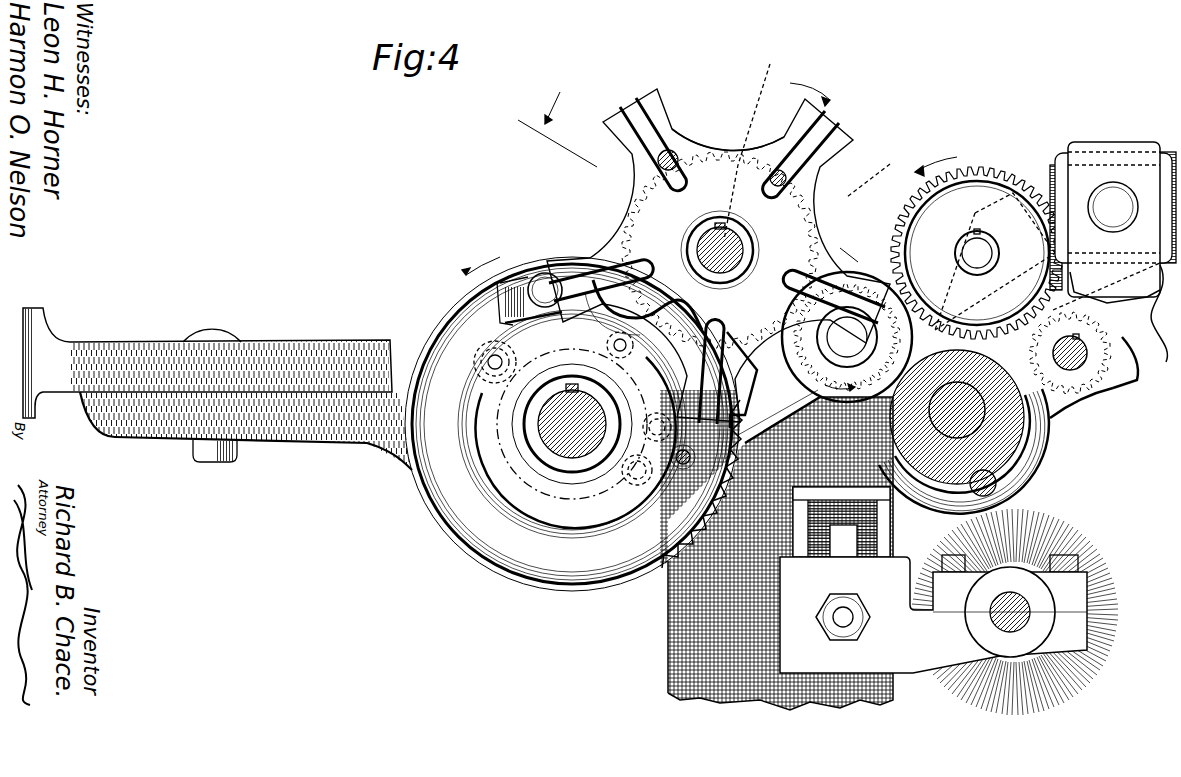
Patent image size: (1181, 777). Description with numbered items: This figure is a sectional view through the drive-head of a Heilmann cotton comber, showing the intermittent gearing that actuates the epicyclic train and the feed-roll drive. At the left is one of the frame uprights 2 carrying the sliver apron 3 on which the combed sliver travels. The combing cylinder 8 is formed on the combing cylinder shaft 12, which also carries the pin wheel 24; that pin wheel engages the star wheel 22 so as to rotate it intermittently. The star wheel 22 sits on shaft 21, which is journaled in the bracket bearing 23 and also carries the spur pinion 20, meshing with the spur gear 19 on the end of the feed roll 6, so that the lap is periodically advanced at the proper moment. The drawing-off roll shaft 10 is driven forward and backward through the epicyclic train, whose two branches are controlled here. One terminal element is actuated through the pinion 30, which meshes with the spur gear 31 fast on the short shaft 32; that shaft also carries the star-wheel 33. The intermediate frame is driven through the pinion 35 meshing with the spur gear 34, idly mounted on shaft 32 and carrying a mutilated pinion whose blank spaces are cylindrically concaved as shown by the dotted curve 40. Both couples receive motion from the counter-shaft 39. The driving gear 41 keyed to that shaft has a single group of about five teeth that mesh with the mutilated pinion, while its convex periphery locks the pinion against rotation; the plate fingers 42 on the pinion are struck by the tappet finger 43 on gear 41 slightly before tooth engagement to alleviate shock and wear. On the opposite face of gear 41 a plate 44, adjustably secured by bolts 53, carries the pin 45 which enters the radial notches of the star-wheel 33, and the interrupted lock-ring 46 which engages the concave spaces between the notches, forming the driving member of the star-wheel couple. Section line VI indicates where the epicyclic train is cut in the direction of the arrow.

The frame uprights 2 is at (360, 455).
The sliver apron 3 is at (255, 348).
The feed roll 6 is at (967, 247).
The combing cylinder 8 is at (1056, 439).
The drawing-off roll shaft 10 is at (797, 307).
The combing cylinder shaft 12 is at (1040, 465).
The spur gear 19 is at (977, 170).
The spur pinion 20 is at (1127, 338).
The shaft 21 is at (1105, 393).
The star wheel 22 is at (1123, 384).
The bracket bearing 23 is at (1095, 145).
The pin wheel 24 is at (949, 601).
The pinion 30 is at (953, 259).
The spur gear 31 is at (620, 112).
The short shaft 32 is at (717, 240).
The star-wheel 33 is at (670, 104).
The spur gear 34 is at (657, 150).
The pinion 35 is at (847, 253).
The counter-shaft 39 is at (563, 453).
The cylindrically concaved blank space 40 is at (777, 142).
The driving gear 41 is at (658, 522).
The plate fingers 42 is at (877, 169).
The tappet finger 43 is at (693, 572).
The plate 44 is at (525, 348).
The pin 45 is at (545, 290).
The lock-ring 46 is at (505, 522).
The bolts 53 is at (473, 354).
The section line VI is at (557, 125).